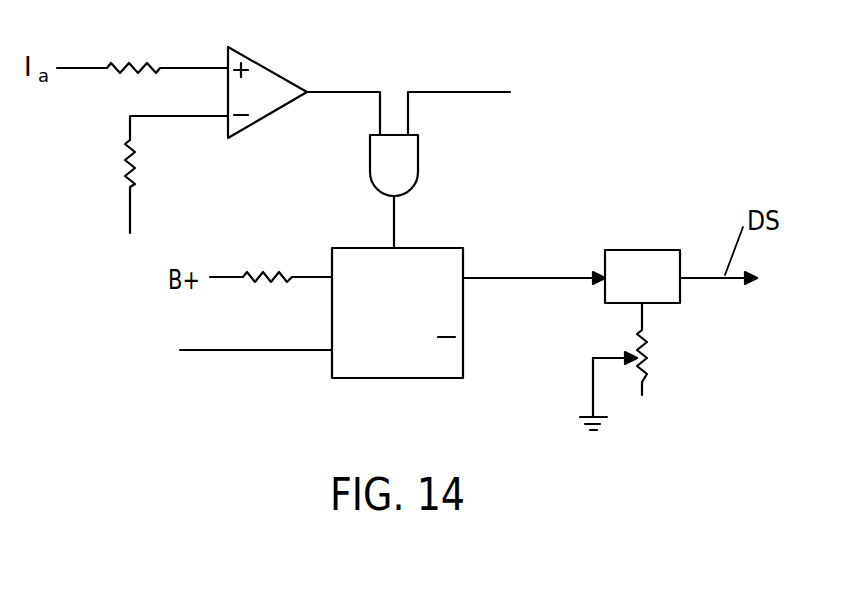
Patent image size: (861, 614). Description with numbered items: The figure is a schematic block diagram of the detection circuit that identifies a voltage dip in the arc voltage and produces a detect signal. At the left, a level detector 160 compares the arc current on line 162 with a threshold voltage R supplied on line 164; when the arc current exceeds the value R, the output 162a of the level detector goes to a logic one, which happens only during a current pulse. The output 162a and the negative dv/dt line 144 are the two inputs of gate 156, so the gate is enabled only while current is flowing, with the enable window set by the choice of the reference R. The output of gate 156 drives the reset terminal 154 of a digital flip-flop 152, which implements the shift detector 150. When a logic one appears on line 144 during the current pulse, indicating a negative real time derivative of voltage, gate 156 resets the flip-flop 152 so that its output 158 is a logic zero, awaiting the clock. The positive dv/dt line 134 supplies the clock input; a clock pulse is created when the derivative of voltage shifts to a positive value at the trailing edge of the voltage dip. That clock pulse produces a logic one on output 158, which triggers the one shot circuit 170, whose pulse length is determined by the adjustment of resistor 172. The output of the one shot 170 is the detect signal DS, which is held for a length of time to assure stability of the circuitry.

The arc current line 162 is at (176, 66).
The level detector 160 is at (270, 67).
The reference voltage line 164 is at (130, 208).
The level detector output 162a is at (338, 92).
The negative dv/dt output line 144 is at (460, 93).
The gate 156 is at (370, 165).
The reset terminal 154 is at (398, 248).
The flip-flop 152 is at (412, 377).
The positive dv/dt output line 134 is at (285, 350).
The flip-flop output 158 is at (535, 278).
The shift detector 150 is at (502, 263).
The one shot circuit 170 is at (647, 250).
The resistor 172 is at (647, 343).